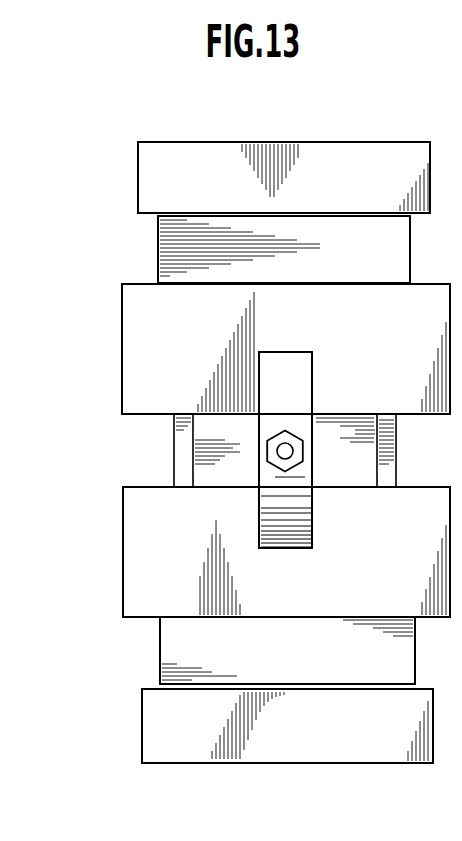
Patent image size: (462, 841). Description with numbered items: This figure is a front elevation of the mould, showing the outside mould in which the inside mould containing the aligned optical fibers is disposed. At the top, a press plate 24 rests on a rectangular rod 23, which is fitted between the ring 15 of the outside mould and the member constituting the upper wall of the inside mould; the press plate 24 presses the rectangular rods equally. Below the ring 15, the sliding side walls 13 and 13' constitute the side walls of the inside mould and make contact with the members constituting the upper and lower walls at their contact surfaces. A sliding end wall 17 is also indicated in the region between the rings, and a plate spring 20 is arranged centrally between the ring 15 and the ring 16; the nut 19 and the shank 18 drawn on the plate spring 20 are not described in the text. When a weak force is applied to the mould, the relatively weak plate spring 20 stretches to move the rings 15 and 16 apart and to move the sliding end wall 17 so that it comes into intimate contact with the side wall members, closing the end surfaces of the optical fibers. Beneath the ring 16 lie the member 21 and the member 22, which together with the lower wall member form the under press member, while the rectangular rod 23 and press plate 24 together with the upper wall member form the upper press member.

The sliding side wall 13 is at (372, 450).
The sliding side wall 13' is at (181, 450).
The ring of the outside mould 15 is at (128, 330).
The ring 16 is at (132, 548).
The sliding end wall 17 is at (208, 472).
The bolt shank / hole 18 is at (292, 451).
The hex nut 19 is at (272, 437).
The plate spring 20 is at (296, 358).
The under press member component 21 is at (162, 661).
The under press member component 22 is at (256, 749).
The rectangular rod 23 is at (158, 252).
The press plate 24 is at (268, 143).